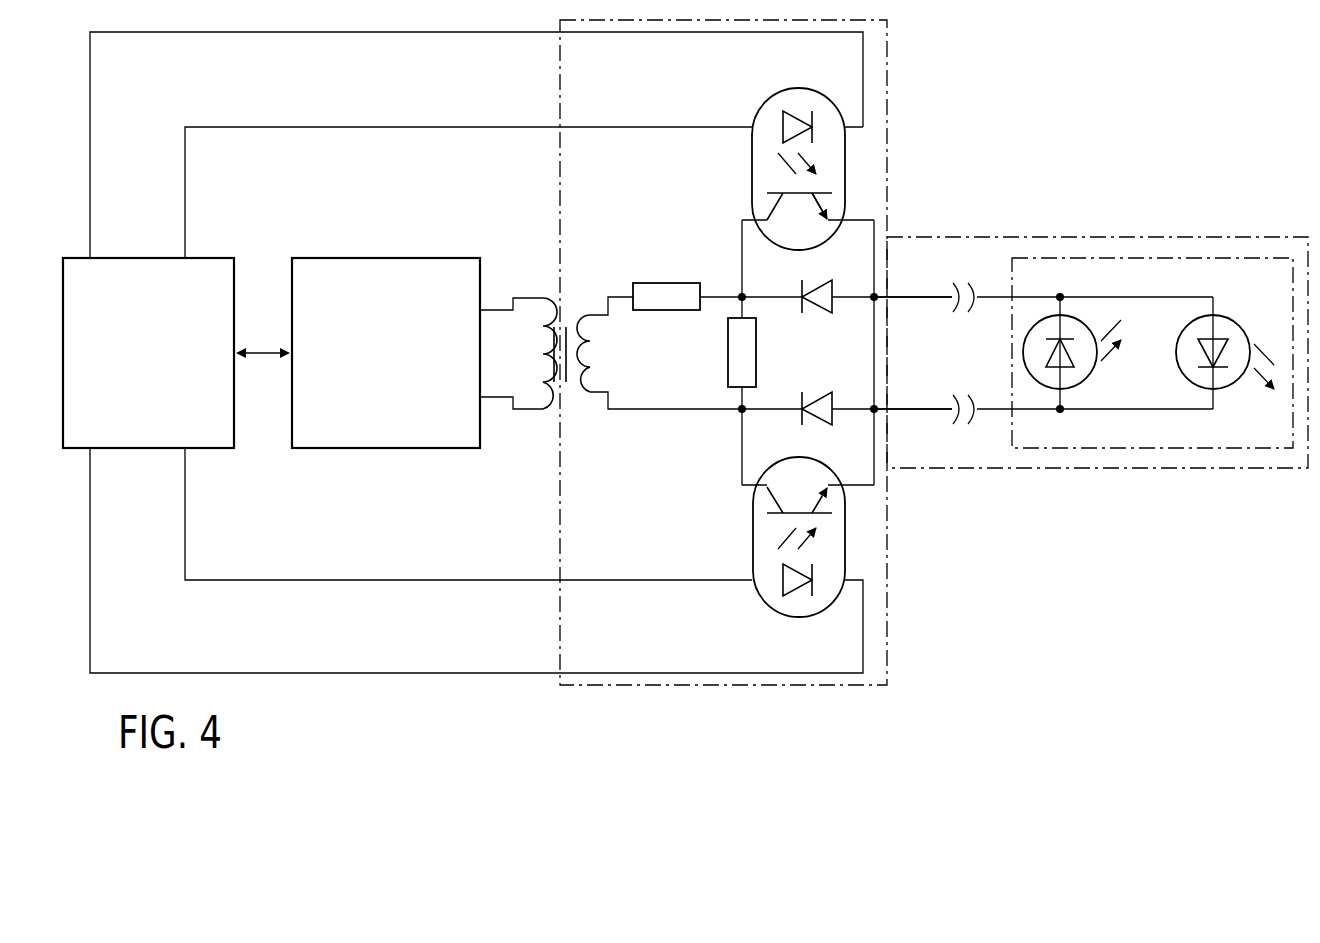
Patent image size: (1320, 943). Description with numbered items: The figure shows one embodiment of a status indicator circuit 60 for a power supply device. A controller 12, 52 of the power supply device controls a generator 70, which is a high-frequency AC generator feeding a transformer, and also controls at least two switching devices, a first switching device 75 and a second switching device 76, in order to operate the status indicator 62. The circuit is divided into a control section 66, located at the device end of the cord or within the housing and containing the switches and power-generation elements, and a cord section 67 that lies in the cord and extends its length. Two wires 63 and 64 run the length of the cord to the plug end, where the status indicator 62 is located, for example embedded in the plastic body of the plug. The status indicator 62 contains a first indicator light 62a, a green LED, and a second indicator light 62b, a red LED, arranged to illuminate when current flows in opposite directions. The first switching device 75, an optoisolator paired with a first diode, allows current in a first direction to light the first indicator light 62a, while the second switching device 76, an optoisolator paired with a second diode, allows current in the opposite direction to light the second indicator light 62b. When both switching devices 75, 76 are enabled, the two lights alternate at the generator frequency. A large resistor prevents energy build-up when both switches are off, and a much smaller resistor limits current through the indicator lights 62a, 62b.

The status indicator circuit 60 is at (1080, 59).
The controller 12 is at (139, 257).
The controller 52 is at (148, 353).
The generator 70 is at (386, 258).
The control section 66 is at (888, 188).
The cord section 67 is at (1097, 237).
The status indicator 62 is at (1150, 448).
The first indicator light 62a is at (1241, 380).
The second indicator light 62b is at (1089, 378).
The wire 63 is at (927, 298).
The wire 64 is at (925, 411).
The first switching device 75 is at (752, 168).
The second switching device 76 is at (753, 538).